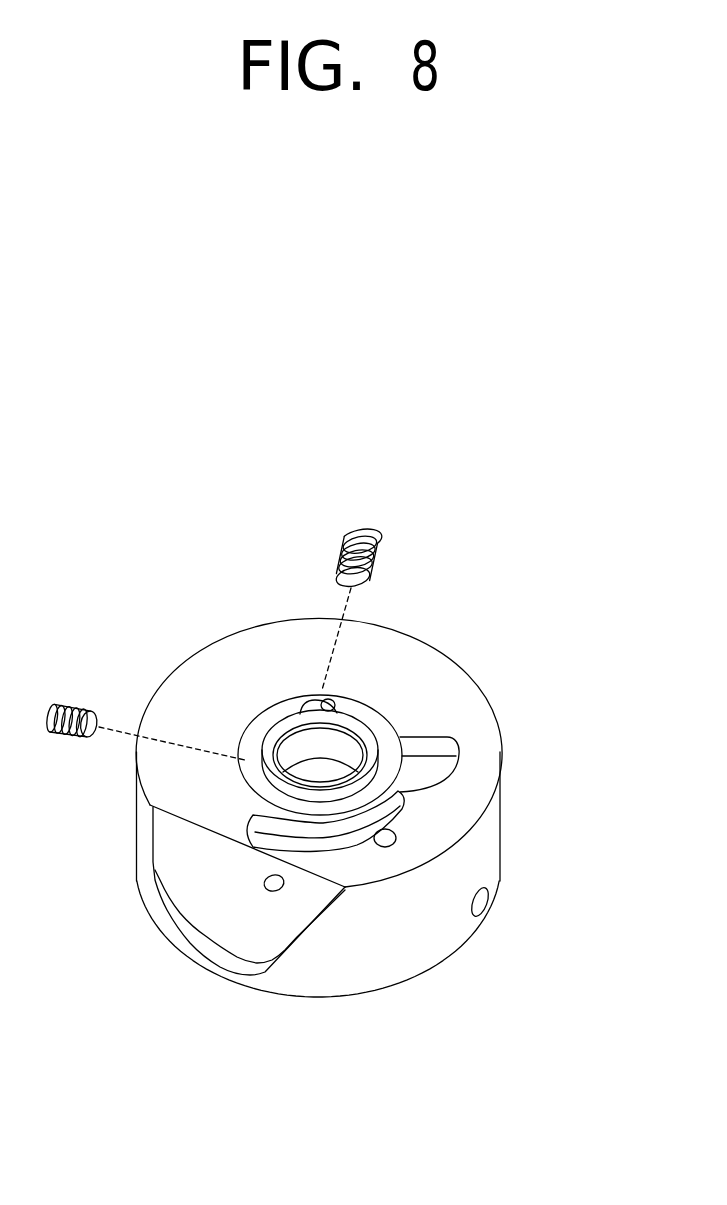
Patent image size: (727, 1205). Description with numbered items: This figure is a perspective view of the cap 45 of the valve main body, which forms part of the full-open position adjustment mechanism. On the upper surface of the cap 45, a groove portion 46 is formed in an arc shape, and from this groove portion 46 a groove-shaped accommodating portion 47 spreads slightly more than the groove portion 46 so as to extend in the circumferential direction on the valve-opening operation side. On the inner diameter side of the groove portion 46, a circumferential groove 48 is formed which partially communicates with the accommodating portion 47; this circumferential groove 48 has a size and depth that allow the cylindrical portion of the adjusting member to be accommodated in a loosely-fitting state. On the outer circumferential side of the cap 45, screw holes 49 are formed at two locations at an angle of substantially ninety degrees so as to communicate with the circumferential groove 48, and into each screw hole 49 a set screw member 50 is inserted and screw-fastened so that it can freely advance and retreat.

The cap 45 is at (353, 958).
The groove portion 46 is at (380, 845).
The accommodating portion 47 is at (455, 762).
The circumferential groove 48 is at (282, 723).
The screw hole 49 is at (338, 710).
The set screw member 50 is at (360, 532).